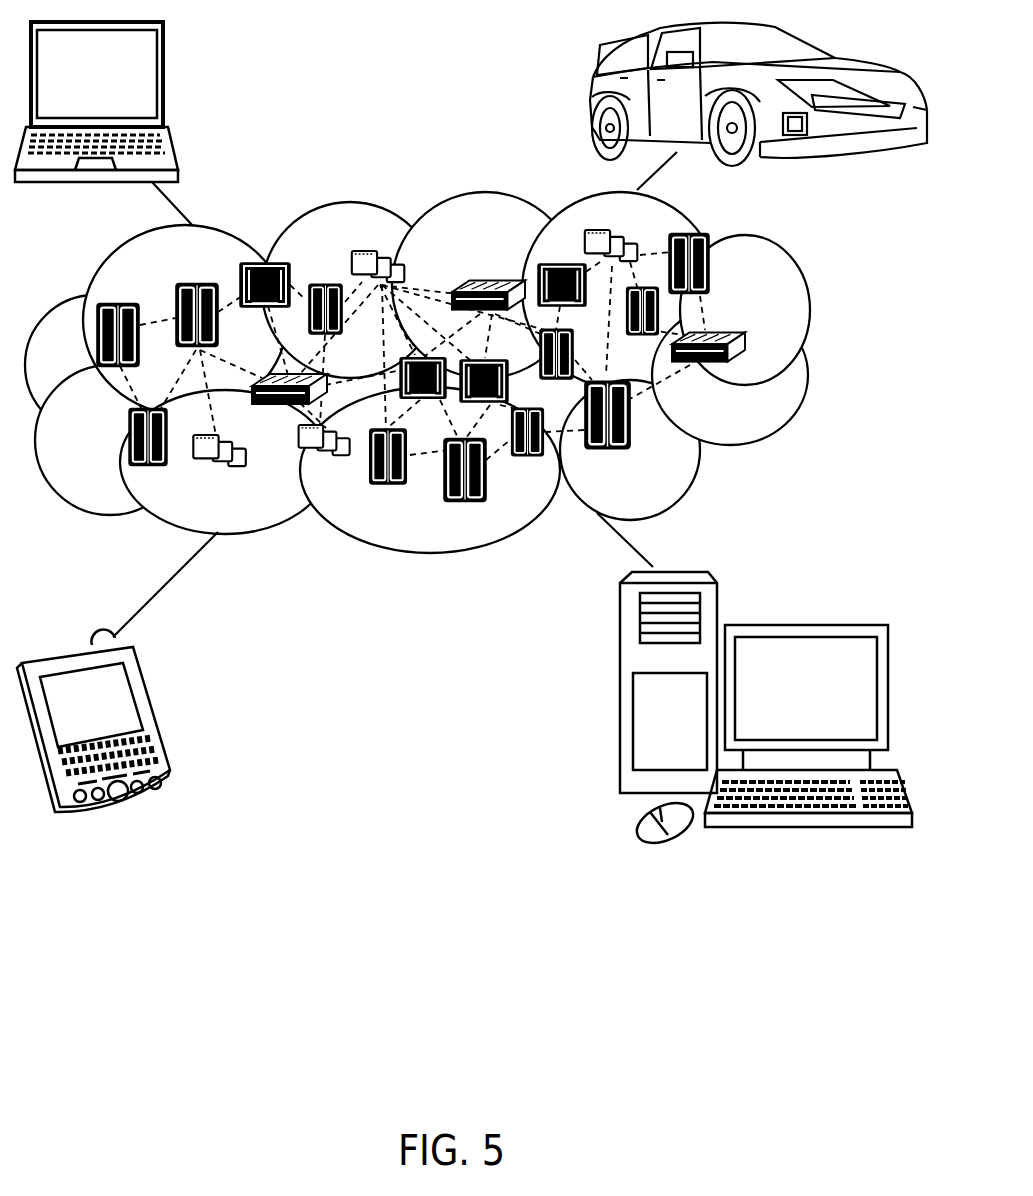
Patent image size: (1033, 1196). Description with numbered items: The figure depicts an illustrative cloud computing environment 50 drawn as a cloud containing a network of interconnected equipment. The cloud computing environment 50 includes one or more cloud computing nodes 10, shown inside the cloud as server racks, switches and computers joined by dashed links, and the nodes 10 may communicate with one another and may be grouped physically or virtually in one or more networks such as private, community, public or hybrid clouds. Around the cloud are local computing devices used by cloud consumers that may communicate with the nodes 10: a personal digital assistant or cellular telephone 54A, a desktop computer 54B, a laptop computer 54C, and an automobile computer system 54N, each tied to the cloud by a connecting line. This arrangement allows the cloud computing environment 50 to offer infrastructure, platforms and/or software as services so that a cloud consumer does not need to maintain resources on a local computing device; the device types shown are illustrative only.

The cloud computing environment 50 is at (810, 343).
The cloud computing node 10 is at (758, 375).
The personal digital assistant (PDA) or cellular telephone 54A is at (152, 715).
The desktop computer 54B is at (805, 623).
The laptop computer 54C is at (164, 81).
The automobile computer system 54N is at (592, 98).